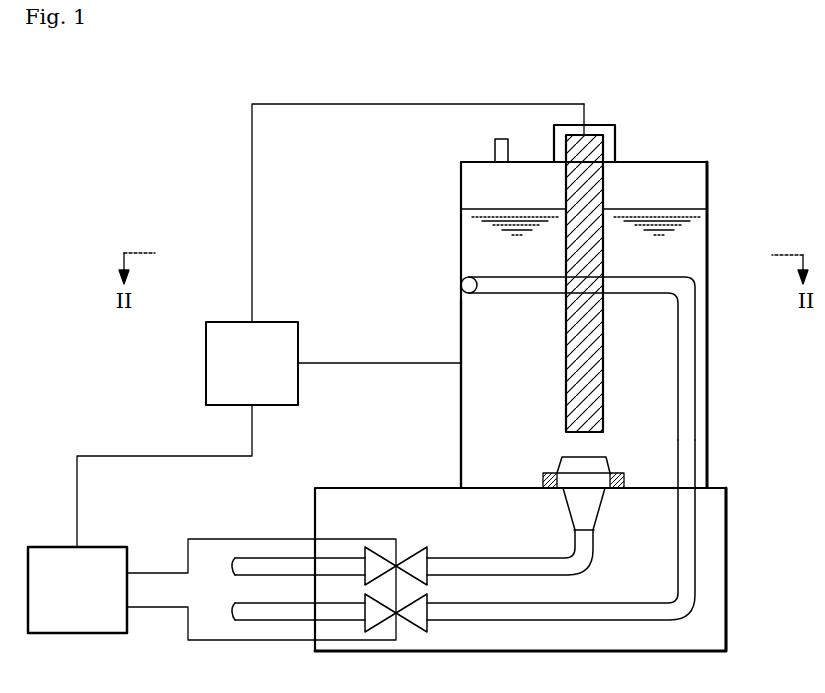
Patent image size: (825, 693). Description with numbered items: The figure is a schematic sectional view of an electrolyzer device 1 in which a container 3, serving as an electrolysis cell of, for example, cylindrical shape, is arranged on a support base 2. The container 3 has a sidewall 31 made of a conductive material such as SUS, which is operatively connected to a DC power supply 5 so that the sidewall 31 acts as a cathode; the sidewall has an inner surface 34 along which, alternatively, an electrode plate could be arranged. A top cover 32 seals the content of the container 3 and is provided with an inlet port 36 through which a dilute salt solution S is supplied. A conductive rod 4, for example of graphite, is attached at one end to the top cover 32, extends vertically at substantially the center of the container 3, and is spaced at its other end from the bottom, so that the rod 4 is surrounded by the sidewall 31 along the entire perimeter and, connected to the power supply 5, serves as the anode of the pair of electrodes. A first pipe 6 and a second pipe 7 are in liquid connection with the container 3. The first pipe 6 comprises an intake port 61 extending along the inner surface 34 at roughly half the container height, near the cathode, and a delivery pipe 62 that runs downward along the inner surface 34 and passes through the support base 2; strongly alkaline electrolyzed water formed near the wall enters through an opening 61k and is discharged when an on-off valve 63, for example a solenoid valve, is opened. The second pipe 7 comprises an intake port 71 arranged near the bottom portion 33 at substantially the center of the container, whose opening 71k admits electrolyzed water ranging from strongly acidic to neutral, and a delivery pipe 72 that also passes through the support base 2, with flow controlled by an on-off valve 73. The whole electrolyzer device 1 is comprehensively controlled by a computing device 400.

The electrolyzer device 1 is at (626, 80).
The support base 2 is at (727, 523).
The container 3 is at (548, 285).
The rod 4 is at (573, 378).
The DC power supply 5 is at (206, 362).
The first pipe 6 is at (523, 410).
The second pipe 7 is at (482, 500).
The dilute salt solution S is at (672, 210).
The sidewall 31 is at (460, 187).
The top cover 32 is at (640, 162).
The bottom portion 33 is at (532, 477).
The inner surface 34 is at (461, 333).
The inlet port 36 is at (495, 149).
The intake port 61 is at (596, 320).
The opening 61k is at (462, 280).
The delivery pipe 62 is at (697, 567).
The on-off valve 63 is at (377, 627).
The intake port 71 is at (565, 477).
The opening 71k is at (589, 462).
The delivery pipe 72 is at (285, 558).
The on-off valve 73 is at (377, 547).
The computing device 400 is at (100, 546).